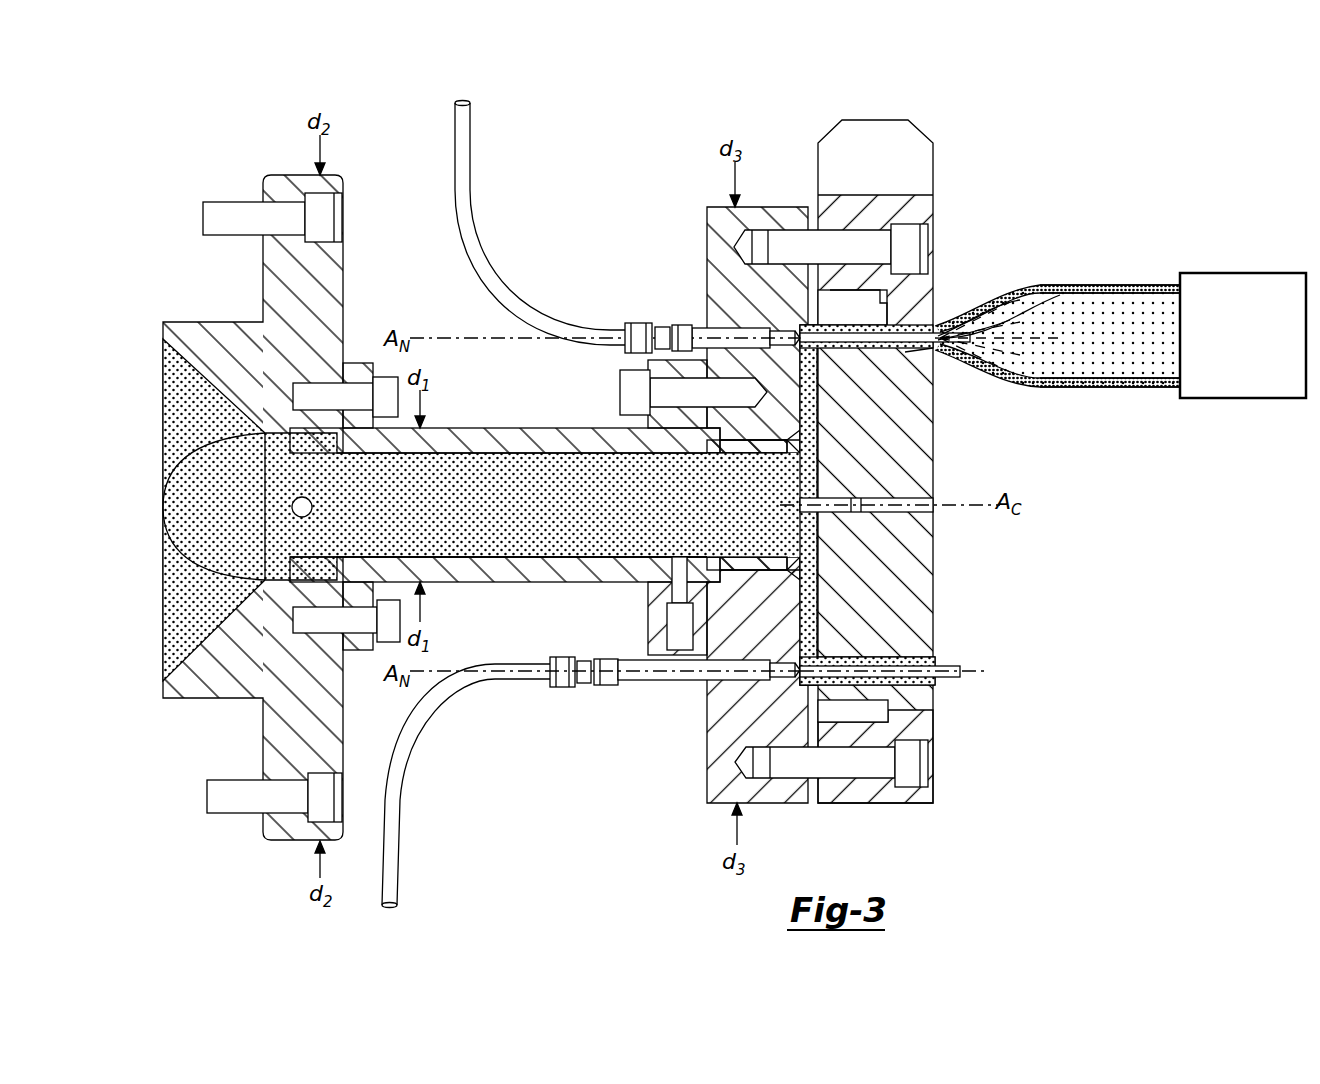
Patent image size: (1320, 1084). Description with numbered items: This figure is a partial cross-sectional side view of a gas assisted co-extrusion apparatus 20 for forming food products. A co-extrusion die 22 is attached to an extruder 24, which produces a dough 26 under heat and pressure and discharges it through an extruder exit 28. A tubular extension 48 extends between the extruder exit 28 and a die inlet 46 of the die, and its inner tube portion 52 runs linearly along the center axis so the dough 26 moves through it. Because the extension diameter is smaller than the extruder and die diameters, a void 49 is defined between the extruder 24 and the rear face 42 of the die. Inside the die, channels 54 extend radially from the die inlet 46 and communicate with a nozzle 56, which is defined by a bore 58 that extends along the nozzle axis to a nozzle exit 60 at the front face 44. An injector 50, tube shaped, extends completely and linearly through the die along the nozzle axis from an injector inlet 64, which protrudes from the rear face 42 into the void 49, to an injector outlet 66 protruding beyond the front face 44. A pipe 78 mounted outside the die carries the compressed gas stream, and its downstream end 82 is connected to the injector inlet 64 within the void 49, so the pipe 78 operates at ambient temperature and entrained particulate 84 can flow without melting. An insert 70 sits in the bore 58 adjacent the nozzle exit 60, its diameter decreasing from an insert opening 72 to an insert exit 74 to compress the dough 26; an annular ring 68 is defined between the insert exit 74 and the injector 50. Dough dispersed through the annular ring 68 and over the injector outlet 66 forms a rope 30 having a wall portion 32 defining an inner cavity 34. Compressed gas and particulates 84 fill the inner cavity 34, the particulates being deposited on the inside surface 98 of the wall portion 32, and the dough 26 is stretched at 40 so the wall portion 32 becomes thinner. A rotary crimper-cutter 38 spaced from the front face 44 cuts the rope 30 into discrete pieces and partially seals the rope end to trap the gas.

The gas assisted co-extrusion apparatus 20 is at (1045, 134).
The co-extrusion die 22 is at (933, 160).
The extruder 24 is at (345, 280).
The dough 26 is at (178, 410).
The extruder exit 28 is at (345, 507).
The rope 30 is at (1115, 285).
The wall portion 32 is at (1160, 284).
The inner cavity 34 is at (1105, 375).
The rotary crimper-cutter 38 is at (1259, 345).
The stretch location 40 is at (966, 374).
The rear face 42 is at (706, 755).
The front face 44 is at (933, 798).
The die inlet 46 is at (690, 530).
The extension 48 is at (558, 578).
The void 49 is at (580, 274).
The injector 50 is at (797, 326).
The inner tube portion 52 is at (522, 555).
The channel 54 is at (820, 385).
The nozzle 56 is at (848, 325).
The bore 58 is at (882, 662).
The nozzle exit 60 is at (958, 300).
The injector inlet 64 is at (683, 324).
The injector outlet 66 is at (1020, 320).
The annular ring 68 is at (985, 320).
The insert 70 is at (937, 328).
The insert opening 72 is at (883, 292).
The insert exit 74 is at (893, 353).
The pipe 78 is at (470, 152).
The downstream end 82 is at (639, 322).
The particulate 84 is at (1060, 380).
The inside surface 98 is at (1135, 375).